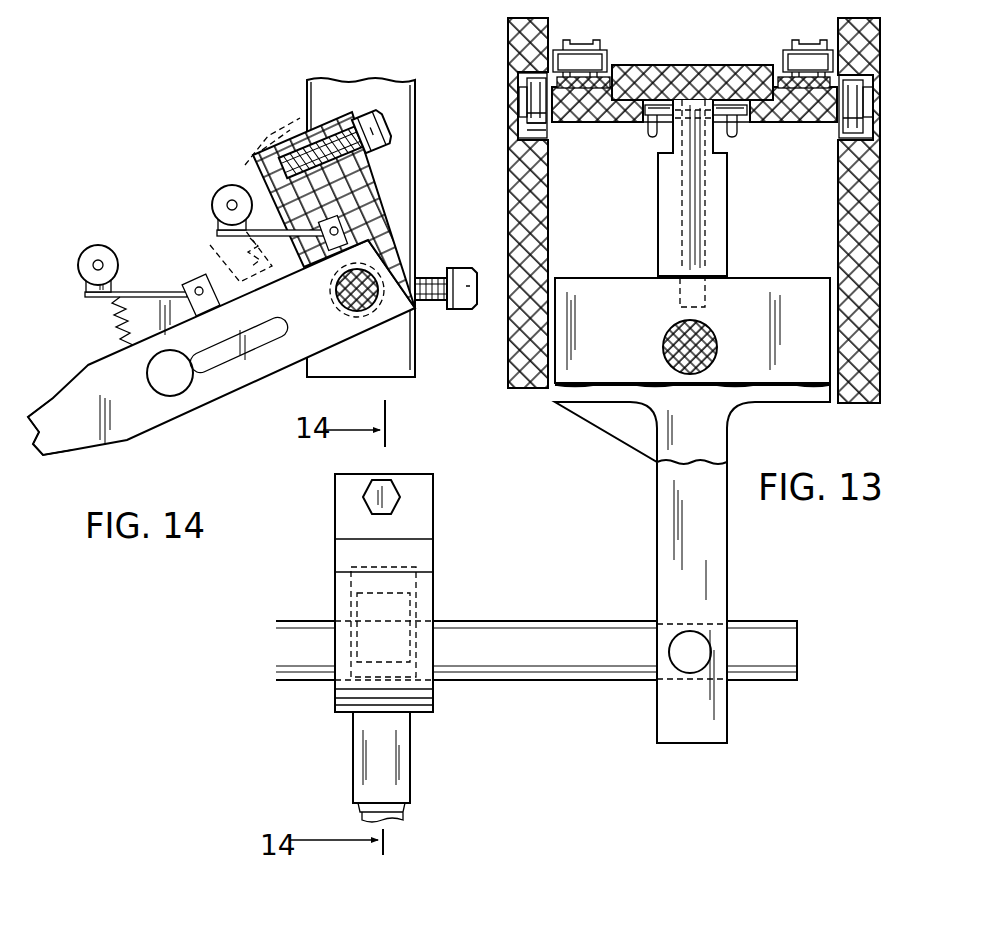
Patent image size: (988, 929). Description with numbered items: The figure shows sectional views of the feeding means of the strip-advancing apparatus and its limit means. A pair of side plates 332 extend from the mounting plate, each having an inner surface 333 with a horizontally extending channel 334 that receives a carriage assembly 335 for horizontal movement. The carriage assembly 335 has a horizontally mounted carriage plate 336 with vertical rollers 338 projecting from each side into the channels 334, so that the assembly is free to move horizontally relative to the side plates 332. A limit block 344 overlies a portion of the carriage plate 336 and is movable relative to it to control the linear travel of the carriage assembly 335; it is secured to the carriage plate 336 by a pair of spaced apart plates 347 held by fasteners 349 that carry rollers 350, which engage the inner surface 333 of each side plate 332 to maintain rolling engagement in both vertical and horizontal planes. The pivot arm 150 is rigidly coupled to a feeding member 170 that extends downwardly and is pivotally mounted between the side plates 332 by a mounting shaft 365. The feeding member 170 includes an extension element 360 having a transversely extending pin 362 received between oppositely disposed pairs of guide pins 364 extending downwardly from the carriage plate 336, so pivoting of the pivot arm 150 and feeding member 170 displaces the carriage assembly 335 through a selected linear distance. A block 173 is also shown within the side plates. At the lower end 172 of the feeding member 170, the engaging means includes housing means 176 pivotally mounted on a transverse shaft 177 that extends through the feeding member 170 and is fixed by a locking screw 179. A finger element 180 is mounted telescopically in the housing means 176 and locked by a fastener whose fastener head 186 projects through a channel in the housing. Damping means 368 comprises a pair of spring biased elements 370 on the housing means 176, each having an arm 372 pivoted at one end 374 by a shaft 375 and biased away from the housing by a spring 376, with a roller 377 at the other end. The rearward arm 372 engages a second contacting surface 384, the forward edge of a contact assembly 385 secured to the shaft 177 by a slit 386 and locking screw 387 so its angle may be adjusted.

In FIG. 13, the pivot arm 150 is at (666, 340).
In FIG. 13, the feeding member 170 is at (718, 558).
In FIG. 14, the feeding member 170 is at (415, 212).
In FIG. 13, the lower end of feeding member 172 is at (702, 745).
In FIG. 13, the slide block 173 is at (612, 278).
In FIG. 13, the housing means 176 is at (412, 785).
In FIG. 14, the housing means 176 is at (215, 405).
In FIG. 13, the transverse shaft 177 is at (520, 668).
In FIG. 14, the transverse shaft 177 is at (366, 313).
In FIG. 13, the locking screw 179 is at (675, 640).
In FIG. 14, the locking screw 179 is at (456, 312).
In FIG. 14, the finger element 180 is at (55, 442).
In FIG. 14, the fastener head 186 is at (173, 388).
In FIG. 13, the side plates 332 is at (513, 222).
In FIG. 13, the inner surface 333 is at (548, 222).
In FIG. 13, the channel 334 is at (517, 130).
In FIG. 13, the carriage assembly 335 is at (752, 130).
In FIG. 13, the carriage plate 336 is at (787, 120).
In FIG. 13, the vertical rollers 338 is at (512, 68).
In FIG. 13, the limit block 344 is at (667, 74).
In FIG. 13, the spaced apart plates 347 is at (605, 80).
In FIG. 13, the fasteners 349 is at (565, 42).
In FIG. 13, the rollers 350 is at (598, 52).
In FIG. 13, the extension element 360 is at (660, 212).
In FIG. 13, the pin 362 is at (645, 133).
In FIG. 13, the guide pins 364 is at (652, 136).
In FIG. 13, the mounting shaft 365 is at (553, 392).
In FIG. 14, the damping means 368 is at (208, 204).
In FIG. 14, the spring biased elements 370 is at (214, 188).
In FIG. 14, the arm 372 is at (217, 241).
In FIG. 14, the end of arm 374 is at (190, 307).
In FIG. 14, the shaft 375 is at (345, 231).
In FIG. 14, the spring 376 is at (118, 325).
In FIG. 14, the roller 377 is at (227, 185).
In FIG. 14, the second contacting surface 384 is at (255, 150).
In FIG. 13, the contact assembly 385 is at (433, 574).
In FIG. 14, the contact assembly 385 is at (385, 186).
In FIG. 14, the slit 386 is at (312, 142).
In FIG. 13, the locking screw 387 is at (402, 497).
In FIG. 14, the locking screw 387 is at (377, 114).